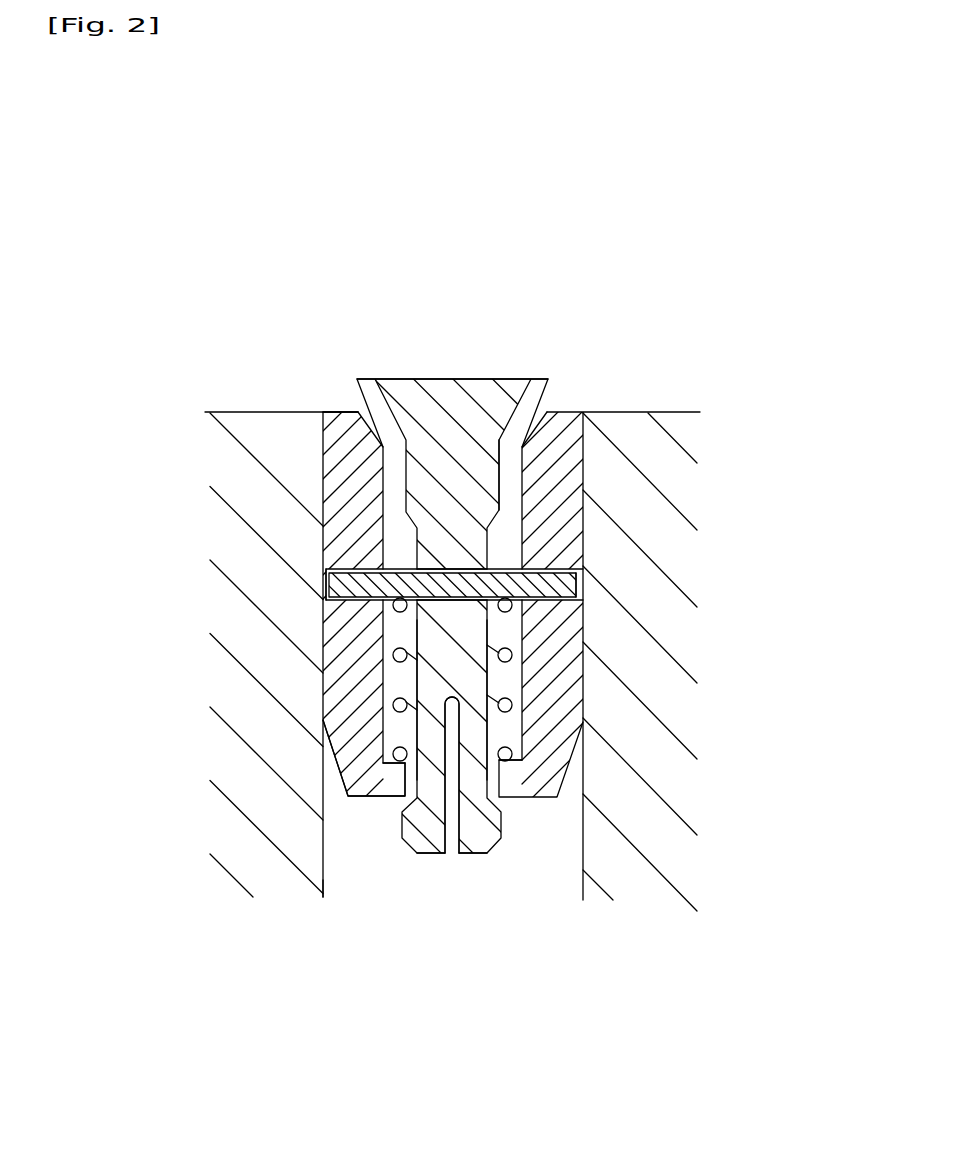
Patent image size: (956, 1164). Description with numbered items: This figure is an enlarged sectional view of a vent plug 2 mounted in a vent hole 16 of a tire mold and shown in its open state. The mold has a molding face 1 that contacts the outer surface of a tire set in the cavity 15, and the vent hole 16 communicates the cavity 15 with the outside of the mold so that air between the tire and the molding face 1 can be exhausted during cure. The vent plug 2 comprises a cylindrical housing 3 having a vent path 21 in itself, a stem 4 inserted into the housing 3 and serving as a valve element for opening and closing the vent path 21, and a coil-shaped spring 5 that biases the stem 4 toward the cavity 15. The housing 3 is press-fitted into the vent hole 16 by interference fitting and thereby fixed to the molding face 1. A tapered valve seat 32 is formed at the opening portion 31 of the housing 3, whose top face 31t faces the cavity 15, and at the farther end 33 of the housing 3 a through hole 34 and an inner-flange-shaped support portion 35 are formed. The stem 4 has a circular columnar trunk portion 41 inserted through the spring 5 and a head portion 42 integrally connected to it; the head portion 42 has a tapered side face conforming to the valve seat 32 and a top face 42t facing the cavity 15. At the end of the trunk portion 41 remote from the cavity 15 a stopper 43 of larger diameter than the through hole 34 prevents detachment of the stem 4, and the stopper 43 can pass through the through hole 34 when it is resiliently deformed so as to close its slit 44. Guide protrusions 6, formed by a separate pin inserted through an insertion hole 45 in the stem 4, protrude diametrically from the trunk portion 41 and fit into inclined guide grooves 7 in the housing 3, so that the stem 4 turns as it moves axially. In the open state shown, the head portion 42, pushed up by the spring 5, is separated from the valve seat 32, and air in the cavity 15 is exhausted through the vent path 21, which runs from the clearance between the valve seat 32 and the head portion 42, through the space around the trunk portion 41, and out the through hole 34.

The molding face 1 is at (235, 412).
The vent plug 2 is at (552, 330).
The housing 3 is at (440, 639).
The stem 4 is at (420, 556).
The spring 5 is at (395, 688).
The guide protrusions 6 is at (326, 585).
The guide grooves 7 is at (326, 599).
The cavity 15 is at (449, 219).
The vent hole 16 is at (357, 877).
The vent path 21 is at (507, 487).
The opening portion 31 is at (332, 429).
The top face of the housing 31t is at (338, 412).
The valve seat 32 is at (536, 428).
The farther end 33 is at (352, 778).
The through hole 34 is at (389, 800).
The support portion 35 is at (508, 763).
The trunk portion 41 is at (480, 668).
The head portion 42 is at (426, 408).
The top face of the head portion 42t is at (496, 379).
The stopper 43 is at (427, 855).
The slit 44 is at (451, 853).
The insertion hole 45 is at (467, 557).